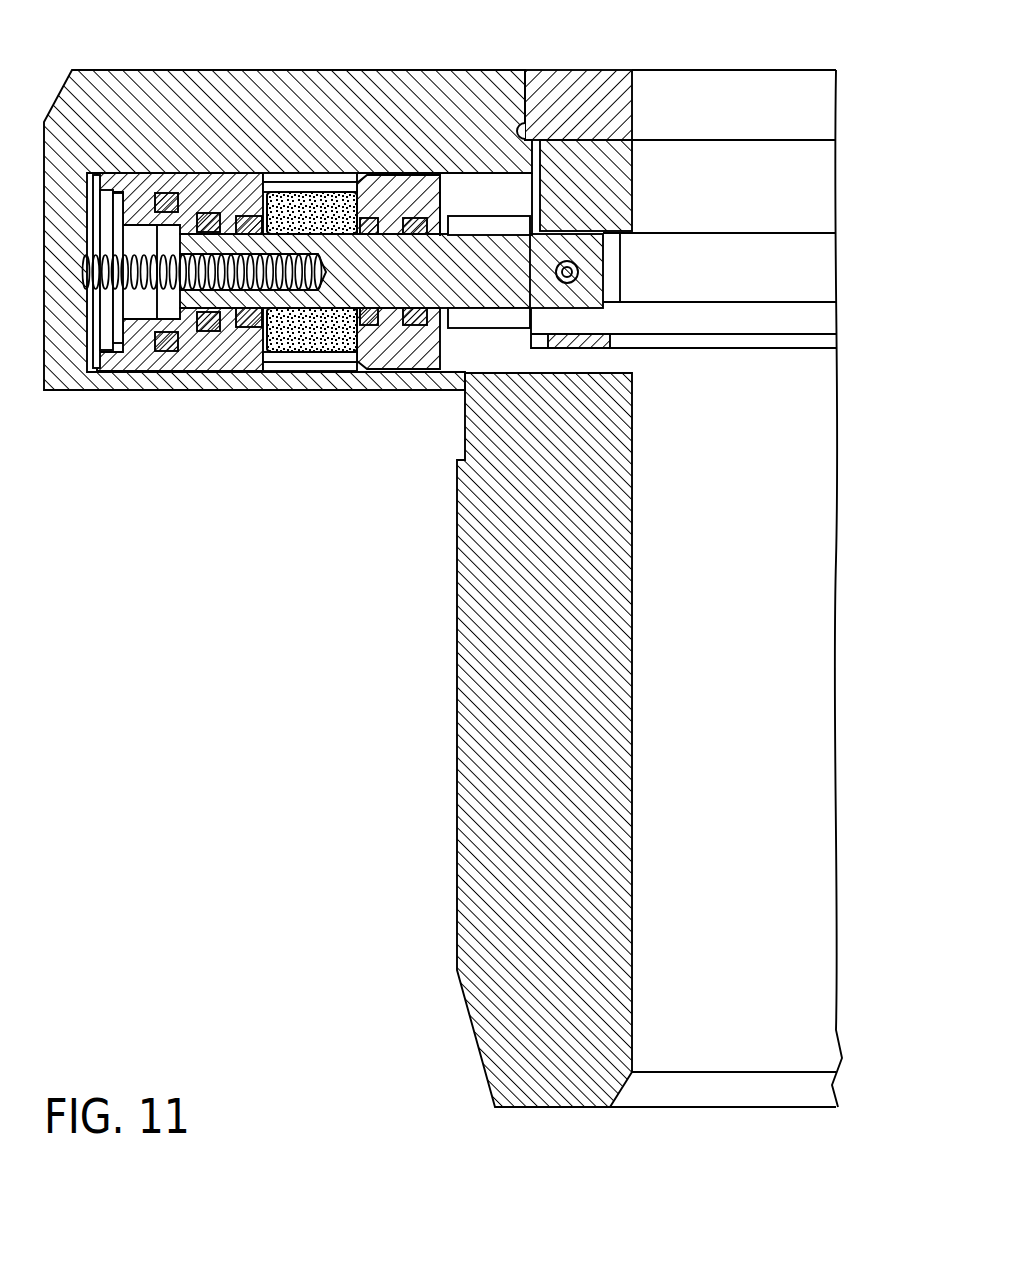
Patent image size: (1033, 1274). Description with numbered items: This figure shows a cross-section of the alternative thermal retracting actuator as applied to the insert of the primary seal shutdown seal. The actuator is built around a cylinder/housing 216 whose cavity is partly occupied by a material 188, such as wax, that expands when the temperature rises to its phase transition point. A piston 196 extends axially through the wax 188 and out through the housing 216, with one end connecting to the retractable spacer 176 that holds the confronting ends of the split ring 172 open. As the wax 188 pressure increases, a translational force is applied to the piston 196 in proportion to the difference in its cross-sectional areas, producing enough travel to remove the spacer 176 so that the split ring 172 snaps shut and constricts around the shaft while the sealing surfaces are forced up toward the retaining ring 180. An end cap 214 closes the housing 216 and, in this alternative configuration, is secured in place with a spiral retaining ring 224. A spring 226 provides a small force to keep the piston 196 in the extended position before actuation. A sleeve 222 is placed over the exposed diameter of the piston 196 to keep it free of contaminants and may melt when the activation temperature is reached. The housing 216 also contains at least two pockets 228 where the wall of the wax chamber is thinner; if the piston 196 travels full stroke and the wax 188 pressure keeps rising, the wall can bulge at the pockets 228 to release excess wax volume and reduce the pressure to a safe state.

The split ring 172 is at (612, 272).
The retractable spacer 176 is at (633, 213).
The retaining ring 180 is at (585, 88).
The wax material 188 is at (273, 362).
The piston 196 is at (478, 292).
The end cap 214 is at (217, 200).
The cylinder/housing 216 is at (143, 372).
The sleeve 222 is at (490, 234).
The spiral retaining ring 224 is at (112, 190).
The spring 226 is at (88, 278).
The pockets 228 is at (325, 178).